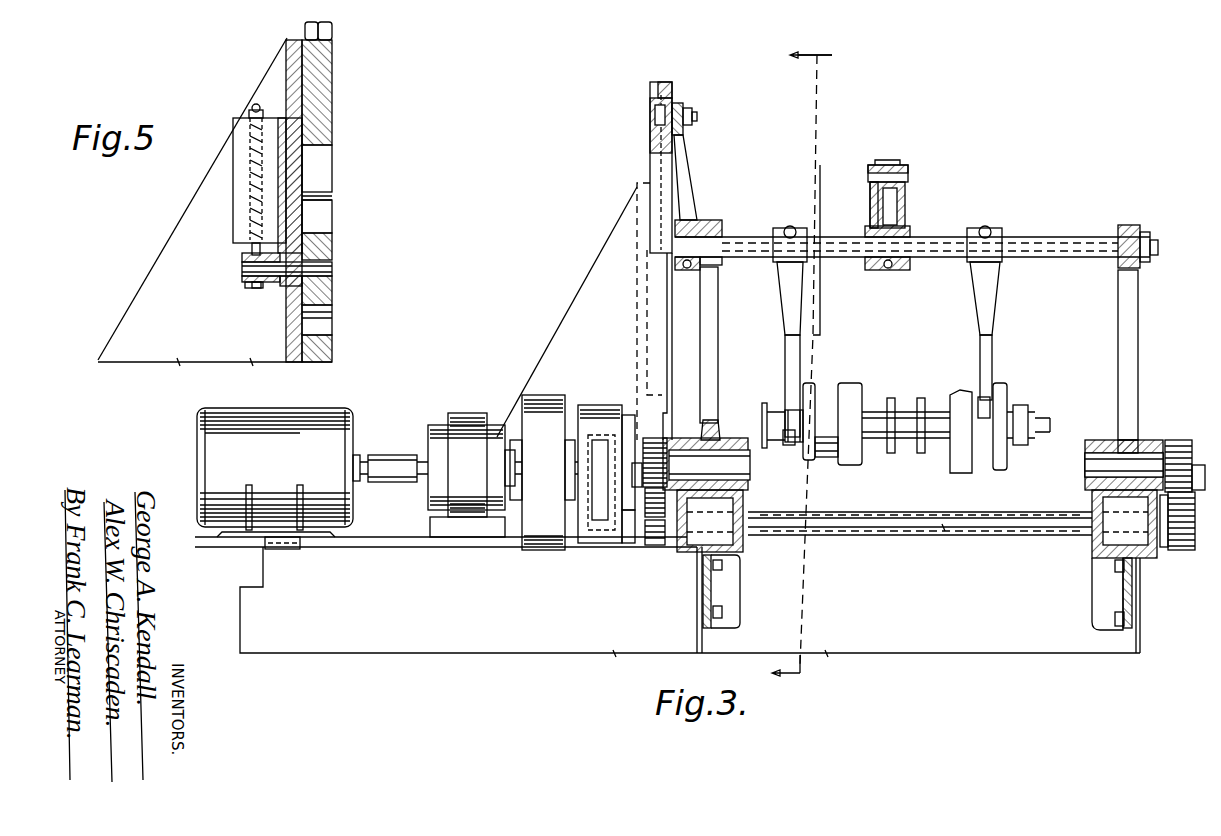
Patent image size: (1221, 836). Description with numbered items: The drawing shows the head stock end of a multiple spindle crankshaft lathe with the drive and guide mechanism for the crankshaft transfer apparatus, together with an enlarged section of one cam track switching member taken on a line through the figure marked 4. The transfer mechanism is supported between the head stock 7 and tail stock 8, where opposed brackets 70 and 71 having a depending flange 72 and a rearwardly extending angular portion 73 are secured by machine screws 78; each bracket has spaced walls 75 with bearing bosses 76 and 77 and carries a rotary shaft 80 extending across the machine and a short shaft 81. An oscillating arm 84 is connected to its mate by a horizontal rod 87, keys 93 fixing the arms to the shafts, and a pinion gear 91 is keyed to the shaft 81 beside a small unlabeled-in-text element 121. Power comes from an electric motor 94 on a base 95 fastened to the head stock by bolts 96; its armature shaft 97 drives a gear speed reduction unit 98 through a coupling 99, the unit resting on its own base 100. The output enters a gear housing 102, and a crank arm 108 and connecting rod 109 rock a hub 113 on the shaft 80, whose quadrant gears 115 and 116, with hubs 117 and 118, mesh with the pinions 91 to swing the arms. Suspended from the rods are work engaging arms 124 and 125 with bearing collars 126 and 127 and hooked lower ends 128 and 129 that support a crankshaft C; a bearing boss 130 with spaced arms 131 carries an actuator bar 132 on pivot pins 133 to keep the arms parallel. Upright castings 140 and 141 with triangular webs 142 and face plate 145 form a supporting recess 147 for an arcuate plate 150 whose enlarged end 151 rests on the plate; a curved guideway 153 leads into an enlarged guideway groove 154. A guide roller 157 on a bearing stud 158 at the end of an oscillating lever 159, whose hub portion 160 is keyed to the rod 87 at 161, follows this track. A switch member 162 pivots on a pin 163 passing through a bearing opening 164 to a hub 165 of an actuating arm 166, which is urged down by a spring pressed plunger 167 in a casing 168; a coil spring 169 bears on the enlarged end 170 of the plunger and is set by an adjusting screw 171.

In FIG. 3, the head stock 7 is at (497, 635).
In FIG. 3, the tail stock 8 is at (1140, 625).
In FIG. 3, the section line 4- 4 is at (812, 371).
In FIG. 3, the bearing bracket 70 is at (738, 628).
In FIG. 3, the bearing bracket 71 is at (1092, 590).
In FIG. 3, the depending flange 72 is at (714, 585).
In FIG. 3, the angular portion 73 is at (693, 548).
In FIG. 3, the spaced walls 75 is at (744, 500).
In FIG. 3, the bearing bosses 76 is at (1095, 440).
In FIG. 3, the bearing boss 77 is at (722, 524).
In FIG. 3, the machine screws 78 is at (722, 616).
In FIG. 3, the rotary shaft 80 is at (945, 538).
In FIG. 3, the shaft 81 is at (716, 432).
In FIG. 3, the oscillating arm 84 is at (714, 313).
In FIG. 3, the horizontal rod 87 is at (1076, 234).
In FIG. 3, the pinion gear 91 is at (650, 440).
In FIG. 3, the key 93 is at (748, 463).
In FIG. 3, the electric motor 94 is at (314, 426).
In FIG. 3, the base 95 is at (360, 540).
In FIG. 3, the bolts 96 is at (265, 531).
In FIG. 3, the armature shaft 97 is at (362, 458).
In FIG. 3, the gear speed reduction unit 98 is at (466, 425).
In FIG. 3, the coupling 99 is at (408, 452).
In FIG. 3, the base 100 is at (468, 522).
In FIG. 3, the gear housing 102 is at (536, 398).
In FIG. 3, the crank arm 108 is at (585, 408).
In FIG. 3, the connecting rod 109 is at (604, 410).
In FIG. 3, the hub 113 is at (622, 537).
In FIG. 3, the quadrant gear 115 is at (657, 502).
In FIG. 3, the quadrant gear 116 is at (1178, 512).
In FIG. 3, the hub 117 is at (655, 543).
In FIG. 3, the hub 118 is at (1172, 530).
In FIG. 3, the pin 121 is at (636, 478).
In FIG. 3, the work engaging arm 124 is at (796, 324).
In FIG. 3, the work engaging arm 125 is at (990, 318).
In FIG. 3, the bearing collar 126 is at (786, 226).
In FIG. 3, the bearing collar 127 is at (1000, 228).
In FIG. 3, the hooked lower end 128 is at (793, 452).
In FIG. 3, the hooked lower end 129 is at (986, 428).
In FIG. 3, the bearing boss 130 is at (890, 270).
In FIG. 3, the spaced arms 131 is at (906, 212).
In FIG. 3, the actuator bar 132 is at (890, 163).
In FIG. 3, the pivot pins 133 is at (909, 176).
In FIG. 3, the crankshaft C is at (858, 416).
In FIG. 5, the vertical casting 140 is at (262, 88).
In FIG. 3, the vertical casting 141 is at (600, 247).
In FIG. 5, the triangular web portions 142 is at (148, 298).
In FIG. 3, the triangular web portions 142 is at (588, 310).
In FIG. 5, the upper front wall portion 145 is at (322, 348).
In FIG. 5, the supporting recess 147 is at (286, 62).
In FIG. 3, the supporting recess 147 is at (650, 232).
In FIG. 5, the arcuate plate 150 is at (332, 33).
In FIG. 3, the arcuate plate 150 is at (664, 82).
In FIG. 3, the enlarged end 151 is at (871, 210).
In FIG. 5, the curved guideway 153 is at (312, 82).
In FIG. 3, the curved guideway 153 is at (658, 120).
In FIG. 5, the enlarged guideway groove 154 is at (318, 170).
In FIG. 3, the guide roller 157 is at (676, 106).
In FIG. 3, the bearing stud 158 is at (690, 113).
In FIG. 3, the oscillating lever 159 is at (686, 178).
In FIG. 3, the hub portion 160 is at (676, 268).
In FIG. 3, the key 161 is at (696, 222).
In FIG. 5, the switch member 162 is at (318, 255).
In FIG. 5, the pin 163 is at (335, 268).
In FIG. 5, the bearing opening 164 is at (285, 284).
In FIG. 5, the hub 165 is at (243, 282).
In FIG. 5, the actuating arm 166 is at (255, 287).
In FIG. 5, the spring pressed plunger 167 is at (245, 253).
In FIG. 5, the casing 168 is at (240, 168).
In FIG. 5, the coil spring 169 is at (250, 202).
In FIG. 5, the upper enlarged end 170 is at (245, 230).
In FIG. 5, the adjusting screw 171 is at (250, 108).